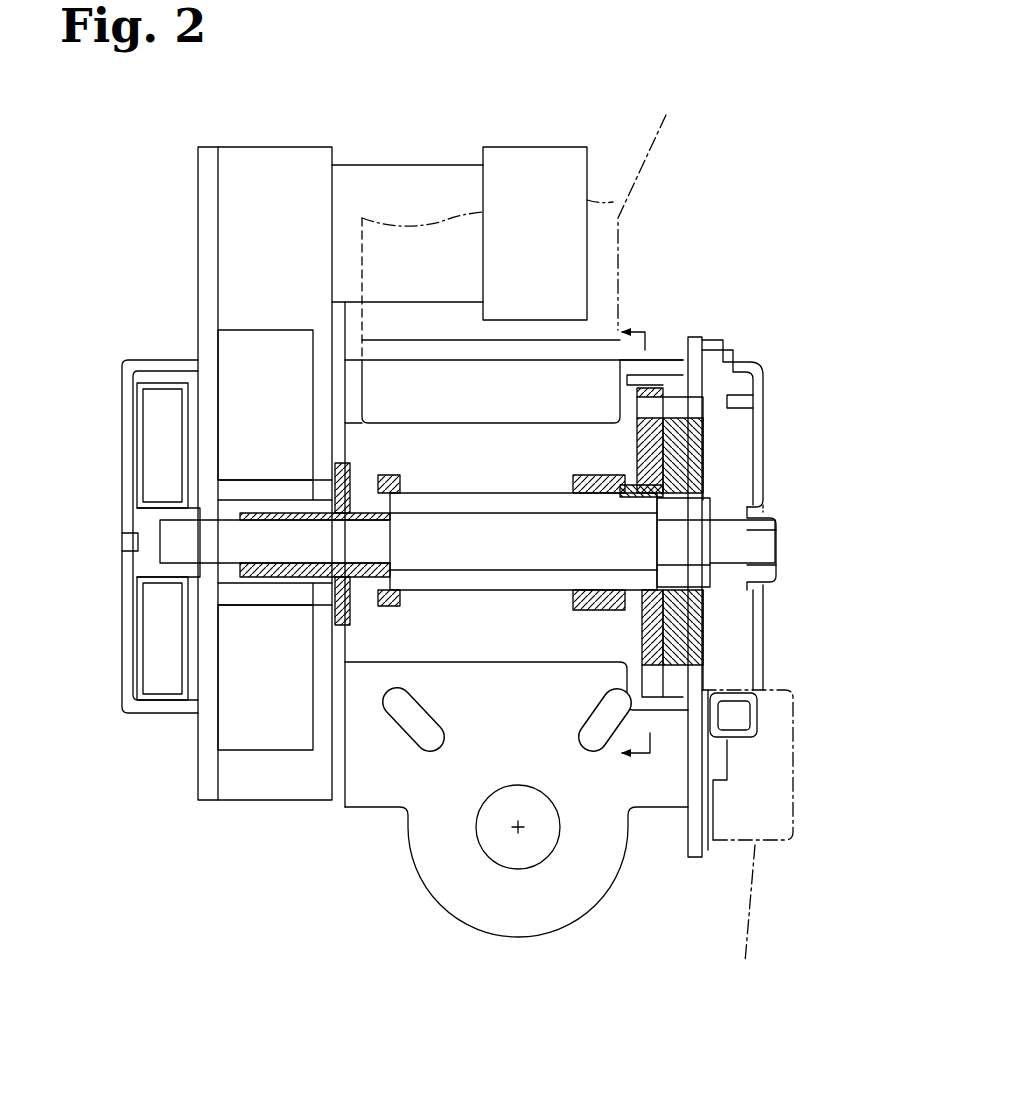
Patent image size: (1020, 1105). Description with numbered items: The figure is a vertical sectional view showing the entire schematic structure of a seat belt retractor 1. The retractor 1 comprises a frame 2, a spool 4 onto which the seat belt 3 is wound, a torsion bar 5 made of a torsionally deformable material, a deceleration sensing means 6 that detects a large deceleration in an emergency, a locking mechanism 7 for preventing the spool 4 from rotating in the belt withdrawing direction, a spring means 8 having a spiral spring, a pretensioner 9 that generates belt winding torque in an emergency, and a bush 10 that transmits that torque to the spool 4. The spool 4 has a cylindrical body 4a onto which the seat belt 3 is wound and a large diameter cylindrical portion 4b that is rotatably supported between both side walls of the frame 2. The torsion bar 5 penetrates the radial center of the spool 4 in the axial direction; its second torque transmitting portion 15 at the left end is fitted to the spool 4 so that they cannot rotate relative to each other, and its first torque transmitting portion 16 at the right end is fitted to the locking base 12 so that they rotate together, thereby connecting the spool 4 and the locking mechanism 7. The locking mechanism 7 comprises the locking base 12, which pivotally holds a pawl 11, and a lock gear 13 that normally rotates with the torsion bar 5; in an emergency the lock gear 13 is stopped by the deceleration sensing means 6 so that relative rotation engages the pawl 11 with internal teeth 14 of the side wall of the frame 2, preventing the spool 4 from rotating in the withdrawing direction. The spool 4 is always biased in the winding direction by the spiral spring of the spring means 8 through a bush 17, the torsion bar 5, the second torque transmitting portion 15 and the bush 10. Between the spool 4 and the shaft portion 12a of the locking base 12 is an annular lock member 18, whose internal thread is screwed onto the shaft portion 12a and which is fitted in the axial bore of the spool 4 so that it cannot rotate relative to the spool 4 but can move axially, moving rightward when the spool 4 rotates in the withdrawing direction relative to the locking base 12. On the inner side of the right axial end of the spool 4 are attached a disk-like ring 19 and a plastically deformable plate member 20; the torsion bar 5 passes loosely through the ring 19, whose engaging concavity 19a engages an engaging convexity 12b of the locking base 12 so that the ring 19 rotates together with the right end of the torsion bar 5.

The retractor 1 is at (104, 226).
The frame 2 is at (430, 847).
The seat belt 3 is at (630, 433).
The spool 4 is at (386, 410).
The cylindrical body 4a is at (412, 448).
The large diameter cylindrical portion 4b is at (683, 337).
The torsion bar 5 is at (435, 532).
The deceleration sensing means 6 is at (739, 917).
The locking mechanism 7 is at (736, 340).
The spring means 8 is at (127, 732).
The pretensioner 9 is at (510, 165).
The bush 10 is at (340, 483).
The pawl 11 is at (675, 675).
The locking base 12 is at (700, 457).
The shaft portion 12a is at (580, 608).
The engaging convexity 12b is at (640, 430).
The lock gear 13 is at (735, 742).
The internal teeth 14 is at (760, 700).
The second torque transmitting portion 15 is at (370, 578).
The first torque transmitting portion 16 is at (765, 512).
The bush 17 is at (165, 565).
The lock member 18 is at (585, 483).
The ring 19 is at (640, 652).
The engaging concavity 19a is at (700, 420).
The plate member 20 is at (640, 388).